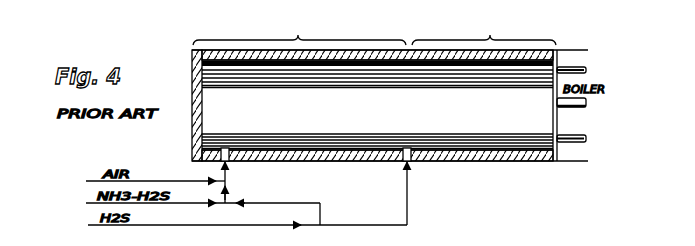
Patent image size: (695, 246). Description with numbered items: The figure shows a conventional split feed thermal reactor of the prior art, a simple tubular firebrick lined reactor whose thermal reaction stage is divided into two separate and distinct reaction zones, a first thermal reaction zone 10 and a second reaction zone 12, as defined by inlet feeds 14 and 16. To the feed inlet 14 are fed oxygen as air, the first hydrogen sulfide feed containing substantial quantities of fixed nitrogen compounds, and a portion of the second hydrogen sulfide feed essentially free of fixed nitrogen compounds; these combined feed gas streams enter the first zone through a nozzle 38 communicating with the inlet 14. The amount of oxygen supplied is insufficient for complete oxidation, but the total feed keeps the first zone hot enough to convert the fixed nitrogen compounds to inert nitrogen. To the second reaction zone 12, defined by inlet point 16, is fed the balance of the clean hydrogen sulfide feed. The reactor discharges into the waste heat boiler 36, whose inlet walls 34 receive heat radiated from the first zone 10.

The first thermal reaction zone 10 is at (299, 76).
The second reaction zone 12 is at (483, 76).
The feed inlet 14 is at (229, 165).
The inlet point 16 is at (410, 164).
The inlet walls 34 is at (557, 97).
The waste heat boiler 36 is at (598, 44).
The nozzle 38 is at (207, 141).